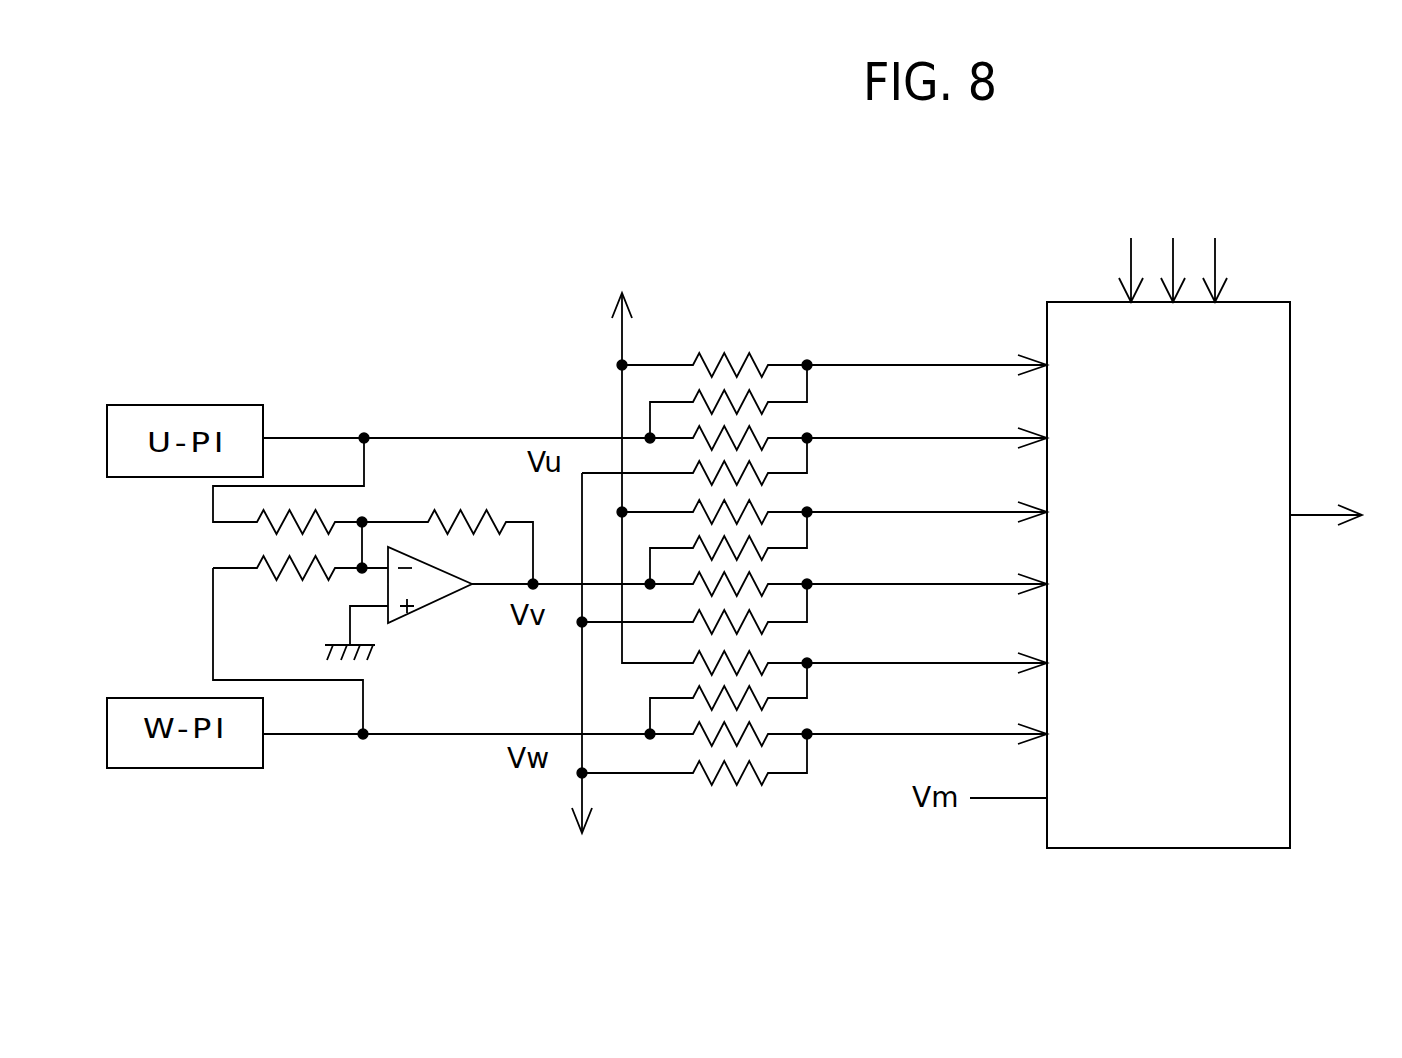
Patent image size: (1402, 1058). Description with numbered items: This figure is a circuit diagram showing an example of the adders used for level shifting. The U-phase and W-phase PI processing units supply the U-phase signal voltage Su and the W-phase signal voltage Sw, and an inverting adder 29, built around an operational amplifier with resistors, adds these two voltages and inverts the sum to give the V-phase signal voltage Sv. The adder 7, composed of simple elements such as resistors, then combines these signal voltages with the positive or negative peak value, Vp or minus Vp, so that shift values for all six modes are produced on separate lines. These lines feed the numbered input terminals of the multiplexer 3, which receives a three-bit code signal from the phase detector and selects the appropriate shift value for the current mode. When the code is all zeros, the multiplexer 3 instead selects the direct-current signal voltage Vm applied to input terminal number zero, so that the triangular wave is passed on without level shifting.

The inverting adder 29 is at (387, 515).
The adder 7 is at (750, 318).
The multiplexer 3 is at (1290, 372).